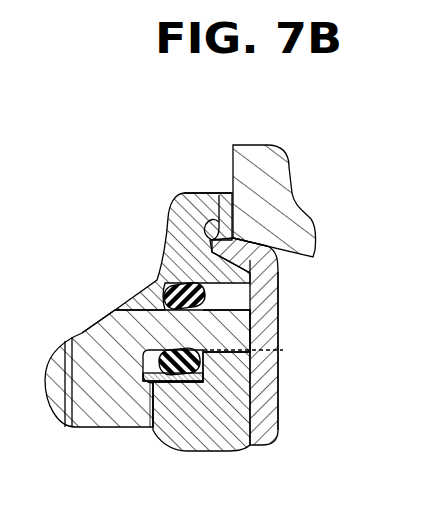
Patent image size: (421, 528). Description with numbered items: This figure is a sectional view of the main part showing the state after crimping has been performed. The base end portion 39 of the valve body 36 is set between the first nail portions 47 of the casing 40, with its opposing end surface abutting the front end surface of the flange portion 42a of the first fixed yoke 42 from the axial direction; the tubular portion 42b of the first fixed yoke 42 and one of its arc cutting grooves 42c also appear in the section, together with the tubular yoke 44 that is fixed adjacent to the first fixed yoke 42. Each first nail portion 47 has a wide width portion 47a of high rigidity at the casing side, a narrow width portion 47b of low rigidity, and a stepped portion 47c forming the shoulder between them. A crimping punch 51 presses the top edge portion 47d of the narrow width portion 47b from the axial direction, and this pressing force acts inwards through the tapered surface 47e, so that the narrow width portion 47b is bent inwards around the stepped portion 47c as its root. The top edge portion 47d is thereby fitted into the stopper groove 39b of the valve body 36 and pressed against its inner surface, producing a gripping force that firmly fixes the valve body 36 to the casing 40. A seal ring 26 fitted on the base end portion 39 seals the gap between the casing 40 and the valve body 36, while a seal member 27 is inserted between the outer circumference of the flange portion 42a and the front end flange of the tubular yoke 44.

The base end portion 39 is at (166, 222).
The valve body 36 is at (166, 222).
The stopper groove 39b is at (205, 240).
The first nail portion 47 is at (299, 317).
The wide width portion 47a is at (265, 299).
The narrow width portion 47b is at (243, 240).
The stepped portion 47c is at (279, 283).
The top edge portion 47d is at (219, 226).
The tapered surface 47e is at (230, 193).
The crimping punch 51 is at (278, 185).
The casing 40 is at (207, 350).
The first fixed yoke 42 is at (188, 404).
The flange portion 42a is at (222, 330).
The tubular portion 42b is at (113, 407).
The arc cutting groove 42c is at (272, 353).
The tubular yoke 44 is at (205, 412).
The seal ring 26 is at (163, 290).
The seal member 27 is at (180, 381).